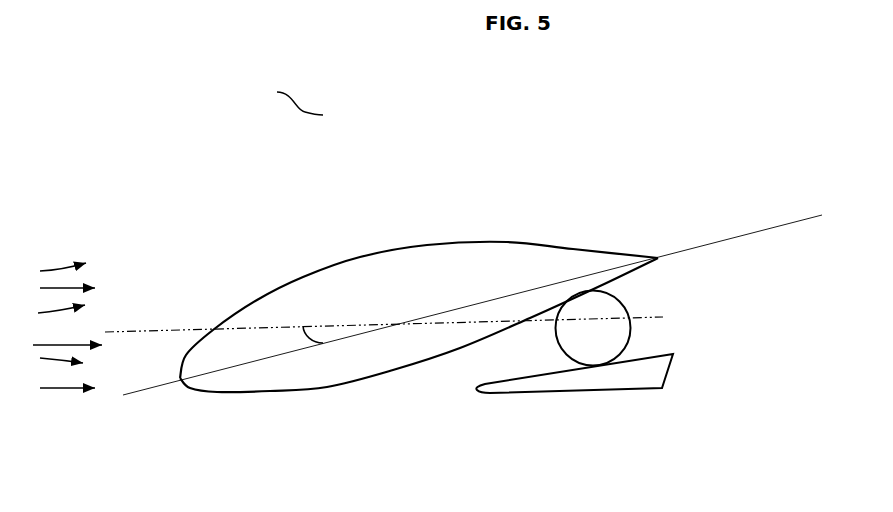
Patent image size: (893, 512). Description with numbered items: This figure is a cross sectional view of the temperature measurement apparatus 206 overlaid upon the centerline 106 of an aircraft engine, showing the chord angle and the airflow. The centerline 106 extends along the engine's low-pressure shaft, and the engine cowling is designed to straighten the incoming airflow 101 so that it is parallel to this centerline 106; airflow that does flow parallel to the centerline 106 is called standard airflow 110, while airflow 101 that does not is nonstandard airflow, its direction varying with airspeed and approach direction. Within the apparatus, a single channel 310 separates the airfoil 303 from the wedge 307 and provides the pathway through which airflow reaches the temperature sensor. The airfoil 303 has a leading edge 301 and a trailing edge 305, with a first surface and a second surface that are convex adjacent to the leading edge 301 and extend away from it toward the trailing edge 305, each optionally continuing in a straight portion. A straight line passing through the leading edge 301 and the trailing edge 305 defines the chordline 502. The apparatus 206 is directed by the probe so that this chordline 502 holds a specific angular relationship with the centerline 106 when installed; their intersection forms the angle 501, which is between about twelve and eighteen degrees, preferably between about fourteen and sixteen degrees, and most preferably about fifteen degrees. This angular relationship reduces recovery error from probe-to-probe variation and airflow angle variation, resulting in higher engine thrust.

The incoming airflow 101 is at (49, 250).
The standard airflow 110 is at (88, 335).
The centerline 106 is at (180, 330).
The airfoil 303 is at (342, 300).
The channel 310 is at (452, 375).
The leading edge 301 is at (180, 381).
The trailing edge 305 is at (660, 257).
The chordline 502 is at (453, 308).
The angle 501 is at (328, 335).
The temperature measurement apparatus 206 is at (730, 340).
The wedge 307 is at (620, 376).